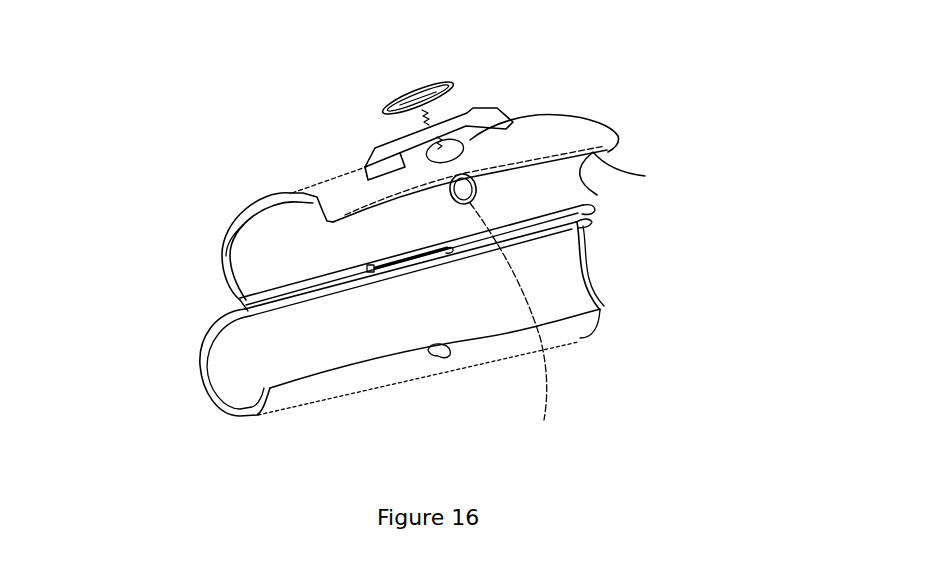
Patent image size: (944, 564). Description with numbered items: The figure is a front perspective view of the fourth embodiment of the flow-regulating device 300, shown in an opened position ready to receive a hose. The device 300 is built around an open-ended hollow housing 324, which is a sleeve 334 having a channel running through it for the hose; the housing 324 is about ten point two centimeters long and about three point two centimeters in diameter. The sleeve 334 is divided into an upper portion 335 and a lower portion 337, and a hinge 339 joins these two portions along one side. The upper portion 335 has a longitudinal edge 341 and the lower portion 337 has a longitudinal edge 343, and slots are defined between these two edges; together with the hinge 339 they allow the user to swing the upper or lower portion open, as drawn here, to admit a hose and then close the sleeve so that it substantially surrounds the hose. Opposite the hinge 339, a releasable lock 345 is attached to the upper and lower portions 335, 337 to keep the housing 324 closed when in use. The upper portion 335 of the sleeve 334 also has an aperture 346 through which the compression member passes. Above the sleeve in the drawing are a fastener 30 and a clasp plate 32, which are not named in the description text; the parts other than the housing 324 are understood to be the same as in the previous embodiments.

The flow-regulating device 300 is at (710, 54).
The screw 30 is at (463, 72).
The clasp plate 32 is at (475, 108).
The open-ended hollow housing 324 is at (245, 207).
The sleeve 334 is at (572, 120).
The upper portion 335 is at (340, 176).
The lower portion 337 is at (375, 378).
The hinge 339 is at (243, 300).
The longitudinal edge 341 is at (607, 196).
The longitudinal edge 343 is at (583, 212).
The releasable lock 345 is at (445, 358).
The aperture 346 is at (476, 137).